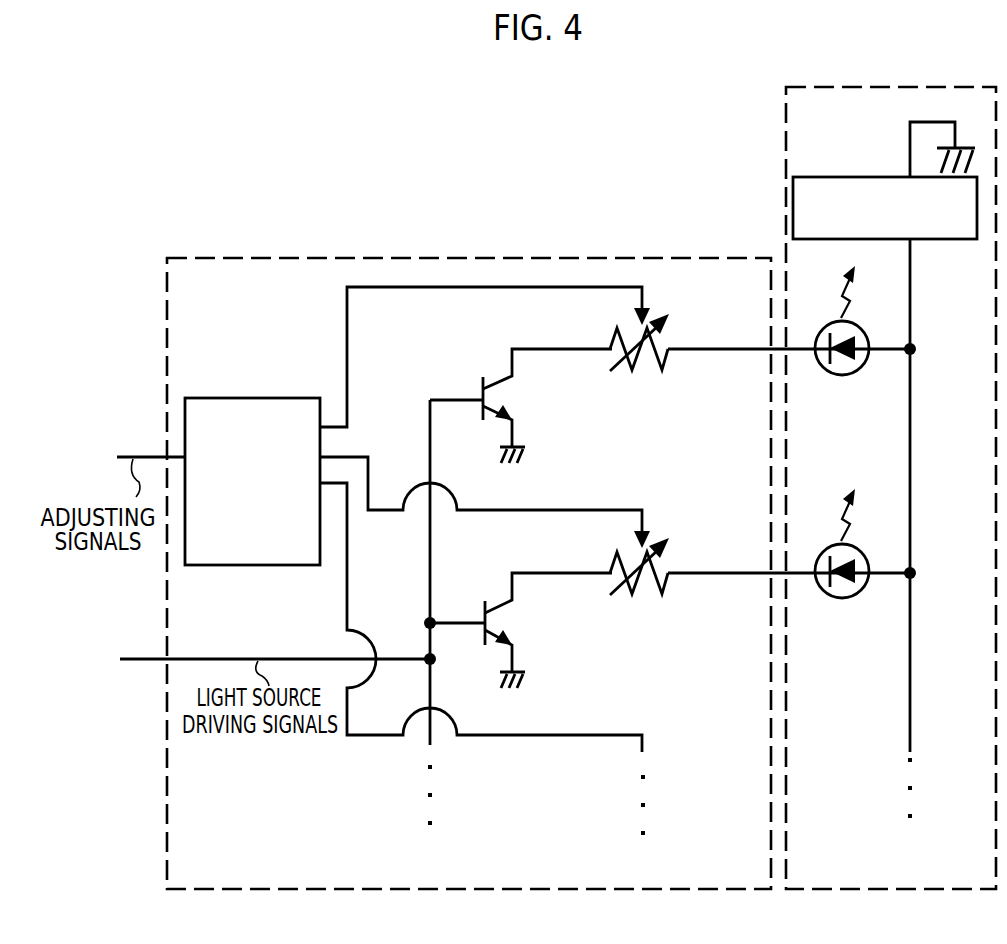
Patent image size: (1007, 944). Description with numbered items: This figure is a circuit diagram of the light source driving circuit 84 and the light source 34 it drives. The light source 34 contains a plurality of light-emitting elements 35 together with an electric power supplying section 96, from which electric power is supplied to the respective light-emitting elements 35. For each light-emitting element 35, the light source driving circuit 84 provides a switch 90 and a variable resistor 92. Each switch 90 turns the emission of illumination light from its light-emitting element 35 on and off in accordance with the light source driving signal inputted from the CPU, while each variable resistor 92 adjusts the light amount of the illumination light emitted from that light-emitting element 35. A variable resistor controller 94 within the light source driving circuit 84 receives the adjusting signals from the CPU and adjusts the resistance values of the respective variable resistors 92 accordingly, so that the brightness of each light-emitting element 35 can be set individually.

The light source 34 is at (886, 85).
The light-emitting element 35 is at (843, 377).
The light source driving circuit 84 is at (428, 256).
The switch 90 is at (476, 366).
The variable resistor 92 is at (637, 386).
The variable resistor controller 94 is at (262, 396).
The electric power supplying section 96 is at (945, 240).